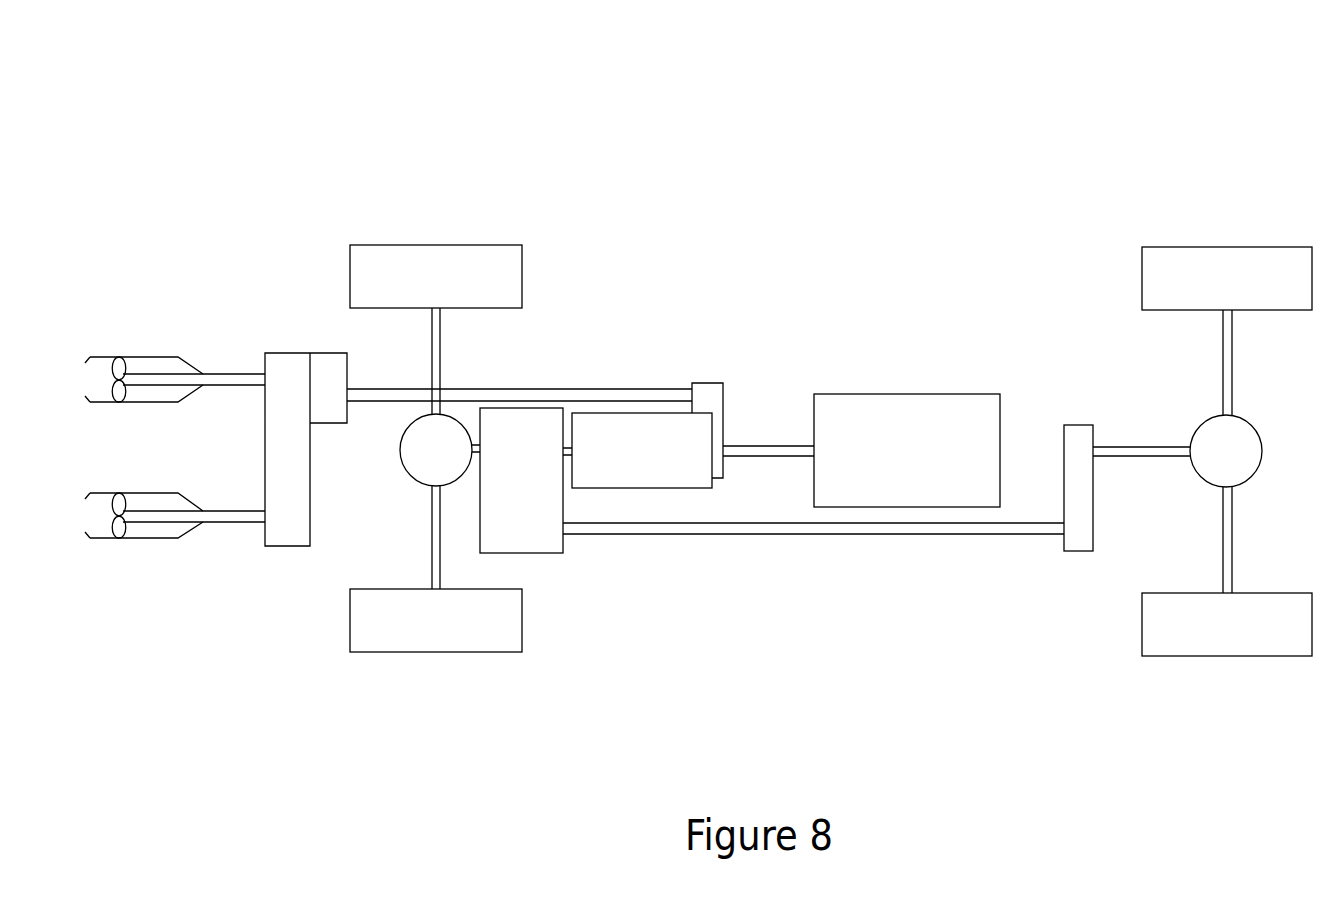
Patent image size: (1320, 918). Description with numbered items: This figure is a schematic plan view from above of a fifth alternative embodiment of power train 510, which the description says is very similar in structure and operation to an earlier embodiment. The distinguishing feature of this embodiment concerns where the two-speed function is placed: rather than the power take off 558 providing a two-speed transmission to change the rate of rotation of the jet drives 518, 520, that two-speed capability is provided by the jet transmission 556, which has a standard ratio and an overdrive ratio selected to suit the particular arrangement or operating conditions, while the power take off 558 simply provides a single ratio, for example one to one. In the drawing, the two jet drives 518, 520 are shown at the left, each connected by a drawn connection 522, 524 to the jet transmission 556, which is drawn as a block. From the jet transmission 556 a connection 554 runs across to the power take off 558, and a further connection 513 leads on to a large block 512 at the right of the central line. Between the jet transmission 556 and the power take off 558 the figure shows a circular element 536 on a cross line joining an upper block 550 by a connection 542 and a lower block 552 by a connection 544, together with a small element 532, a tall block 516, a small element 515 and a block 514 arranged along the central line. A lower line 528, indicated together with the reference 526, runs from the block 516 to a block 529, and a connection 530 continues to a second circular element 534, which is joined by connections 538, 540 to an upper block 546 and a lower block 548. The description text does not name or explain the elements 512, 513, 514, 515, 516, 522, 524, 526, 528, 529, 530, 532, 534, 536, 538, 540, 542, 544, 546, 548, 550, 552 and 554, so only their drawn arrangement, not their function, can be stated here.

The power train 510 is at (804, 181).
The engine 512 is at (912, 456).
The engine output shaft 513 is at (785, 448).
The transmission 514 is at (654, 464).
The coupling 515 is at (567, 450).
The electric motor 516 is at (538, 492).
The jet drive 518 is at (158, 365).
The jet drive 520 is at (155, 527).
The first propeller shaft 522 is at (233, 383).
The second propeller shaft 524 is at (237, 517).
The drive line 526 is at (908, 536).
The drive shaft 528 is at (775, 537).
The gearbox 529 is at (1077, 537).
The shaft 530 is at (1133, 449).
The coupling 532 is at (476, 445).
The electric machine 534 is at (1242, 463).
The electric machine 536 is at (452, 462).
The shaft 538 is at (1227, 375).
The shaft 540 is at (1227, 553).
The shaft 542 is at (432, 358).
The shaft 544 is at (433, 560).
The auxiliary unit 546 is at (1243, 290).
The auxiliary unit 548 is at (1243, 636).
The auxiliary unit 550 is at (450, 288).
The auxiliary unit 552 is at (450, 633).
The shaft 554 is at (647, 397).
The jet transmission 556 is at (303, 461).
The power take off 558 is at (713, 393).